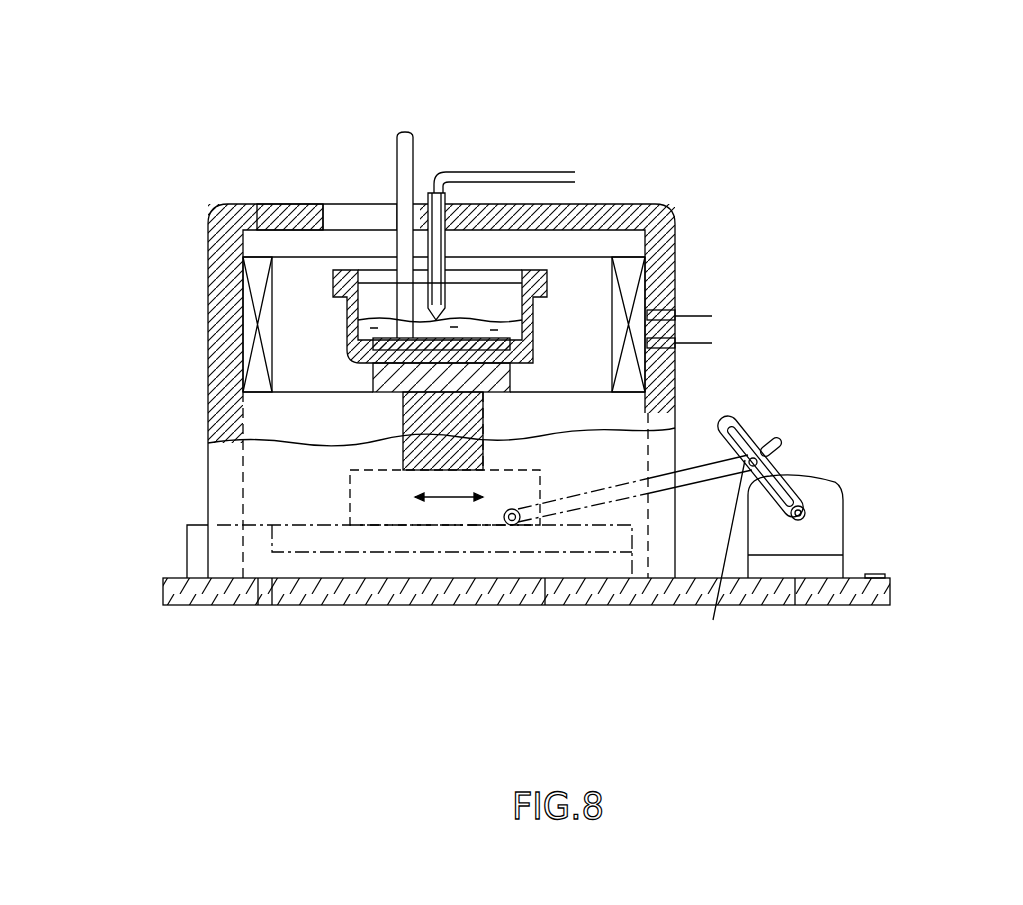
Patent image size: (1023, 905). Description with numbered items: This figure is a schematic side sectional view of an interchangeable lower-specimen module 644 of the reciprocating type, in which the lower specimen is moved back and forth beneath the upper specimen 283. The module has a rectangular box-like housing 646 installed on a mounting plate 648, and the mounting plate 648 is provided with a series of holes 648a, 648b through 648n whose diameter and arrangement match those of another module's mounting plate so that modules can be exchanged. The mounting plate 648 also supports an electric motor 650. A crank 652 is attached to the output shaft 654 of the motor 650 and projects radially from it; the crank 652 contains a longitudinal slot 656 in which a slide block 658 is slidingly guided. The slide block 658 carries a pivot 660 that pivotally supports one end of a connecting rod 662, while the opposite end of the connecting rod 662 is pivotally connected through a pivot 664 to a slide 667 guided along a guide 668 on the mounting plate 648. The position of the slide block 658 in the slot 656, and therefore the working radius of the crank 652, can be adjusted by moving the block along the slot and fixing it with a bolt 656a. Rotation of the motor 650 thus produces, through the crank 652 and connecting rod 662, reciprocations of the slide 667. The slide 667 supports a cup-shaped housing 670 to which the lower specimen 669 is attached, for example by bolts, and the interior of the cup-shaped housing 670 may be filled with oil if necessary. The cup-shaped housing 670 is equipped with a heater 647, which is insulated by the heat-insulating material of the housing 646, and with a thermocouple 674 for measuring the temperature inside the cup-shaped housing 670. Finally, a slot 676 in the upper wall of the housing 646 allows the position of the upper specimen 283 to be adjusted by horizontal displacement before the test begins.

The lower-specimen module 644 is at (138, 372).
The housing 646 is at (222, 298).
The heater 647 is at (253, 270).
The slot 676 is at (357, 217).
The upper specimen 283 is at (412, 153).
The thermocouple 674 is at (518, 172).
The lower specimen 669 is at (478, 340).
The cup-shaped housing 670 is at (533, 322).
The slide 667 is at (367, 500).
The guide 668 is at (290, 542).
The pivot 664 is at (522, 525).
The connecting rod 662 is at (690, 465).
The slide block 658 is at (716, 600).
The longitudinal slot 656 is at (737, 412).
The bolt 656a is at (775, 430).
The pivot 660 is at (772, 418).
The crank 652 is at (760, 450).
The output shaft 654 is at (805, 513).
The electric motor 650 is at (827, 480).
The mounting plate 648 is at (203, 602).
The hole 648a is at (267, 603).
The hole 648b is at (538, 602).
The hole 648n is at (798, 603).